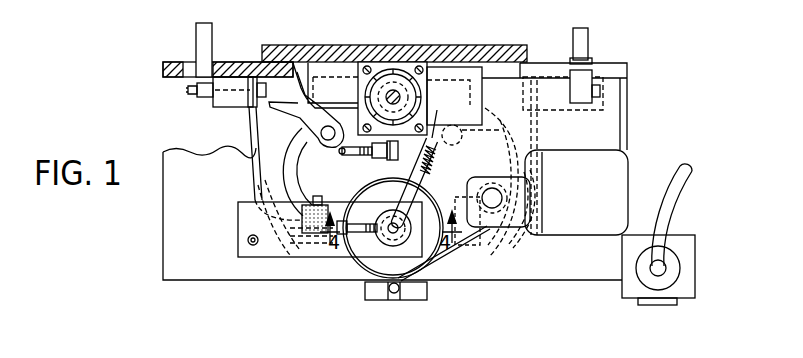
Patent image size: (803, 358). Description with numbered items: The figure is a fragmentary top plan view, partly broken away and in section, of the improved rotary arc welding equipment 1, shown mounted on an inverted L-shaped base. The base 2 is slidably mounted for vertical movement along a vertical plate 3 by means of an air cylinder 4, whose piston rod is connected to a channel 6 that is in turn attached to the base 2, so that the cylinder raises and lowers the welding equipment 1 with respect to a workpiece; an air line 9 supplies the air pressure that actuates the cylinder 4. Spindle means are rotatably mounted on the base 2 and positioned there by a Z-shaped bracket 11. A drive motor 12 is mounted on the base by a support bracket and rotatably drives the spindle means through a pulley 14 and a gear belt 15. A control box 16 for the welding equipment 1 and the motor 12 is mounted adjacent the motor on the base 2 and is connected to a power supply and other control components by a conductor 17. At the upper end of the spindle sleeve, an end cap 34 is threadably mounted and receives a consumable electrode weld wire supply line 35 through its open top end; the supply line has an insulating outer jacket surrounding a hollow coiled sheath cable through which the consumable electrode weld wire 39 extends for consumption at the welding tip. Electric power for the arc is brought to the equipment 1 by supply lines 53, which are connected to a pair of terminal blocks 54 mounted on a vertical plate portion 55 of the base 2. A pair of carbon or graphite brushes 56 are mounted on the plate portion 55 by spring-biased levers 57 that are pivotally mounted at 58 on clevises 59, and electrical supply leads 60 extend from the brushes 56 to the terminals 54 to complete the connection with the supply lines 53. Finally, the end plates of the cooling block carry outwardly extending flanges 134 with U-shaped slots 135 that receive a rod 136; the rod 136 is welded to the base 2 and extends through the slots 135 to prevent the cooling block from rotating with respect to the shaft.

The rotary arc welding equipment 1 is at (116, 60).
The base 2 is at (195, 238).
The vertical plate 3 is at (487, 50).
The air cylinder 4 is at (380, 70).
The channel 6 is at (338, 80).
The air line 9 is at (357, 153).
The Z-shaped bracket 11 is at (272, 268).
The drive motor 12 is at (627, 175).
The pulley 14 is at (357, 227).
The gear belt 15 is at (357, 265).
The control box 16 is at (690, 288).
The conductor 17 is at (688, 178).
The end cap 34 is at (427, 260).
The consumable electrode weld wire supply line 35 is at (437, 200).
The consumable electrode weld wire 39 is at (430, 133).
The supply lines 53 is at (203, 36).
The terminal blocks 54 is at (232, 100).
The vertical plate portion 55 is at (165, 68).
The brushes 56 is at (487, 253).
The spring-biased levers 57 is at (292, 163).
The pivot 58 is at (320, 134).
The clevises 59 is at (250, 120).
The electrical supply leads 60 is at (250, 148).
The flanges 134 is at (417, 292).
The U-shaped slots 135 is at (392, 298).
The rod 136 is at (398, 299).